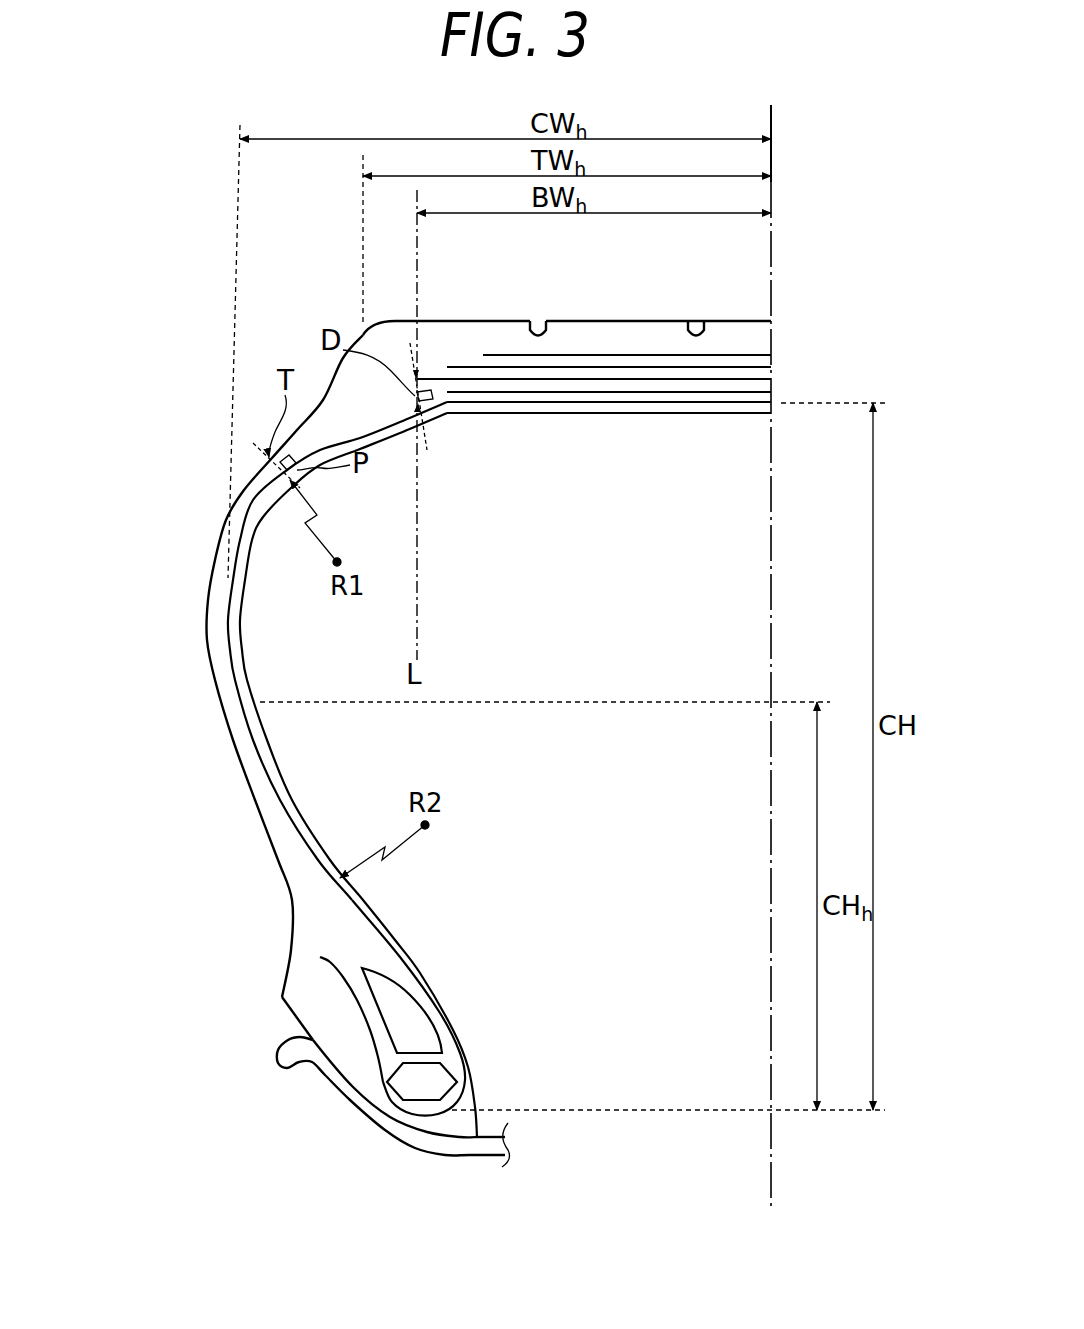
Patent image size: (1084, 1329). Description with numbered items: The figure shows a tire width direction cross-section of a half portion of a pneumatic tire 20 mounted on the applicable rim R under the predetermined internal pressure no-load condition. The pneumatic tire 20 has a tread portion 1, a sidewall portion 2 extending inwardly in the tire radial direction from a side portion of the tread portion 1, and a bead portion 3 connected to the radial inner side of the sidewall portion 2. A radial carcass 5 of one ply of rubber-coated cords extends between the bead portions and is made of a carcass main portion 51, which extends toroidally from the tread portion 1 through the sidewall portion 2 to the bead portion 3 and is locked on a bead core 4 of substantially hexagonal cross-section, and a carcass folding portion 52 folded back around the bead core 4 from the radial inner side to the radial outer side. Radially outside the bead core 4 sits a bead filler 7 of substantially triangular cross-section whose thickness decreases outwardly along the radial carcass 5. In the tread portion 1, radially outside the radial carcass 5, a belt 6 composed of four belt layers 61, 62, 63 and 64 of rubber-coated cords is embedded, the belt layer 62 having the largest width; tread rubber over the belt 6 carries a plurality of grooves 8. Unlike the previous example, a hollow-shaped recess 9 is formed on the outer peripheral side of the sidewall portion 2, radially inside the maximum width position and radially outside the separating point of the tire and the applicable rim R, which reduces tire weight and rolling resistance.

The tread portion 1 is at (532, 304).
The sidewall portion 2 is at (190, 637).
The bead portion 3 is at (300, 1118).
The bead core 4 is at (437, 1080).
The radial carcass 5 is at (440, 880).
The carcass main portion 51 is at (410, 985).
The carcass folding portion 52 is at (332, 968).
The belt 6 is at (838, 265).
The belt layer 61 is at (758, 391).
The belt layer 62 is at (757, 376).
The belt layer 63 is at (757, 367).
The belt layer 64 is at (750, 354).
The bead filler 7 is at (417, 1035).
The grooves 8 is at (540, 318).
The recess 9 is at (277, 965).
The pneumatic tire 20 is at (172, 336).
The applicable rim R is at (280, 1050).